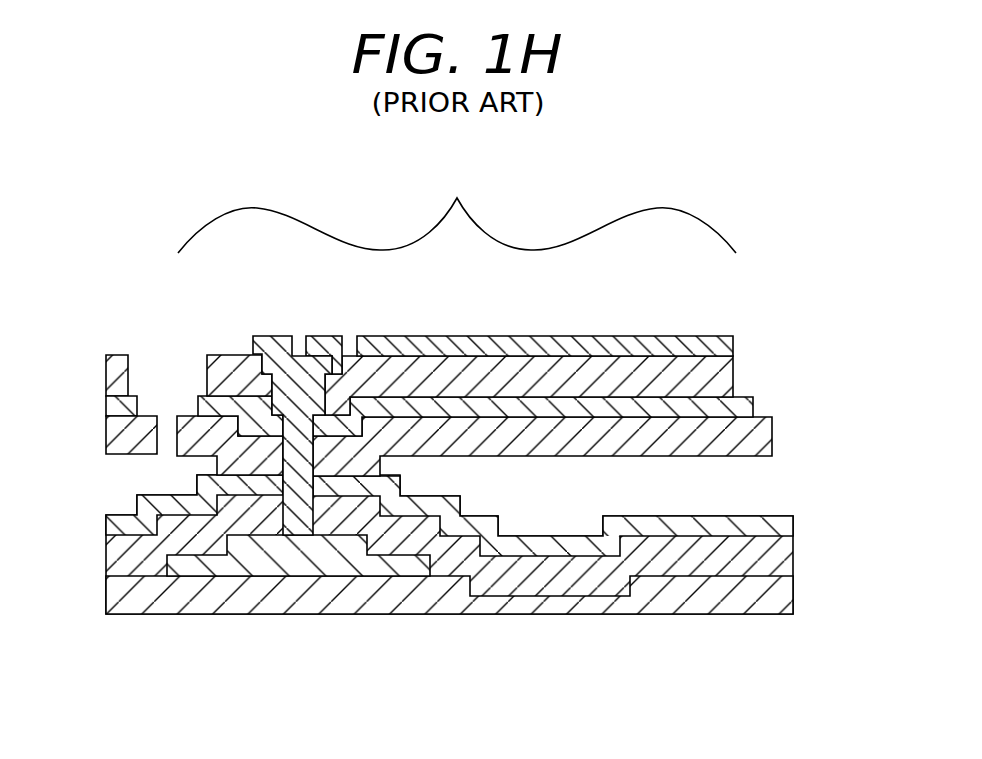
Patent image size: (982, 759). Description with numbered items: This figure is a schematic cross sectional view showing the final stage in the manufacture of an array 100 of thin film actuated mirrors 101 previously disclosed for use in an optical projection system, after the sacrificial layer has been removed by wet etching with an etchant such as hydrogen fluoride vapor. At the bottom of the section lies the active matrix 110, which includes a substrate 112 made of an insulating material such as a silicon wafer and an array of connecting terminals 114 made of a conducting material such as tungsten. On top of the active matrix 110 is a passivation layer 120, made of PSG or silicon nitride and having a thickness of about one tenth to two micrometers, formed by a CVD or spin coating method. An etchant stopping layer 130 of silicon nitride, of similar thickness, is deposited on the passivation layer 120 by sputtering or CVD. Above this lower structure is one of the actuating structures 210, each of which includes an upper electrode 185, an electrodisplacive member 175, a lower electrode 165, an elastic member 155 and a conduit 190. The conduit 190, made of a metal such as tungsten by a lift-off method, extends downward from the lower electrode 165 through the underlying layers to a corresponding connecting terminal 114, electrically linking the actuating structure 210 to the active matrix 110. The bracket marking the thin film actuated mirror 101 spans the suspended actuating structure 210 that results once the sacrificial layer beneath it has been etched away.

The array of thin film actuated mirrors 100 is at (706, 150).
The thin film actuated mirror 101 is at (457, 208).
The active matrix 110 is at (95, 532).
The substrate 112 is at (773, 603).
The connecting terminal 114 is at (287, 556).
The passivation layer 120 is at (773, 558).
The etchant stopping layer 130 is at (768, 528).
The elastic member 155 is at (760, 438).
The lower electrode 165 is at (740, 408).
The electrodisplacive member 175 is at (743, 379).
The upper electrode 185 is at (732, 345).
The conduit 190 is at (270, 348).
The actuating structure 210 is at (95, 335).